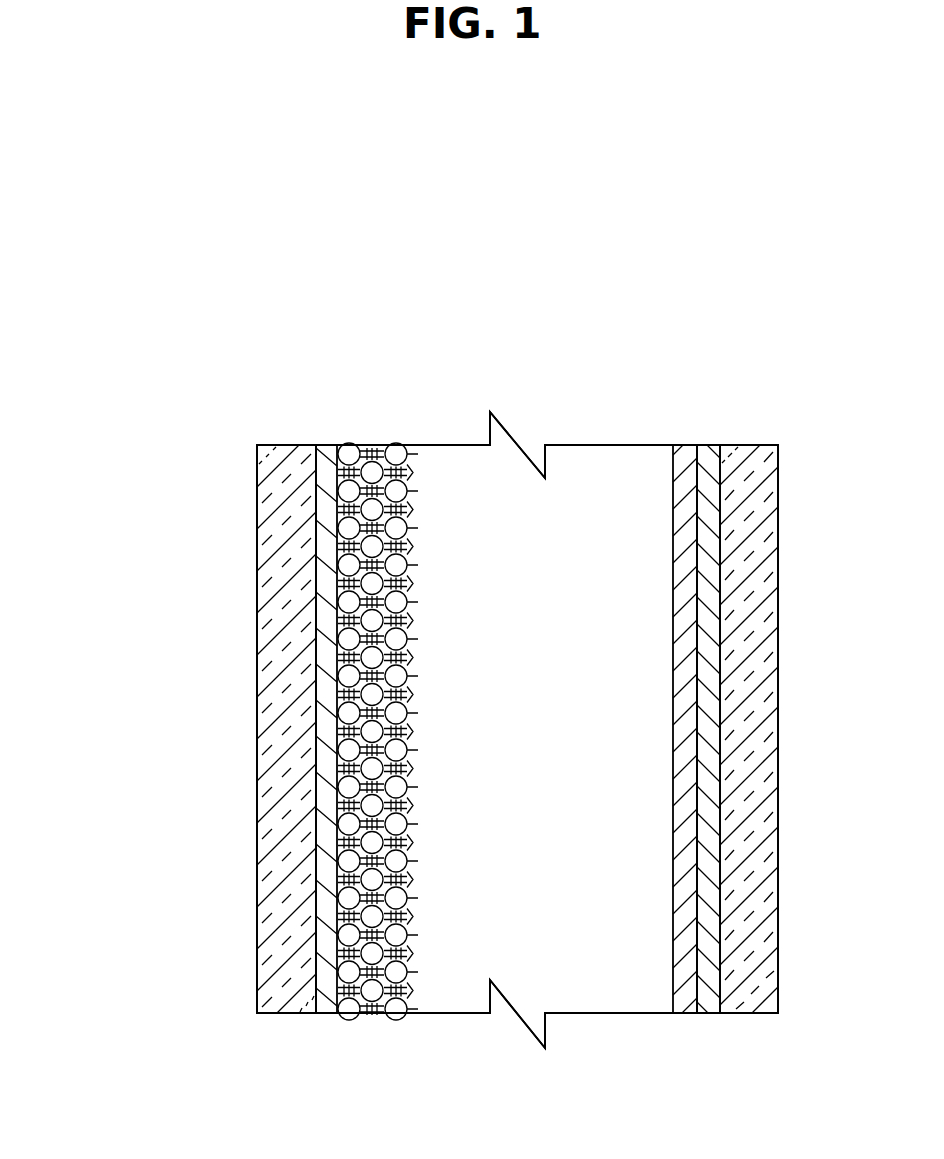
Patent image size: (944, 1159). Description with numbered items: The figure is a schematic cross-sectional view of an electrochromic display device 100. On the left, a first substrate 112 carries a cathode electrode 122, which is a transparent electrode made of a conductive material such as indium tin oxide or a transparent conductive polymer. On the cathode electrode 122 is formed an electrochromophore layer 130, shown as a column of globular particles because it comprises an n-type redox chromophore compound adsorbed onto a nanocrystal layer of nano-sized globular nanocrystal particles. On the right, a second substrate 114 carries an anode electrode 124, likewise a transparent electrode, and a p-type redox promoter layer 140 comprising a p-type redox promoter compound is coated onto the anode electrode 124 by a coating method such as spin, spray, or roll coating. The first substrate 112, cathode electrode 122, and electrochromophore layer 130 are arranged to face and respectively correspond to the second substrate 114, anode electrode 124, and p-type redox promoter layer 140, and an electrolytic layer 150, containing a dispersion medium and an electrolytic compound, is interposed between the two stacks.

The electrochromic display device 100 is at (200, 284).
The first substrate 112 is at (287, 457).
The cathode electrode 122 is at (327, 457).
The electrochromophore layer 130 is at (373, 446).
The electrolytic layer 150 is at (585, 468).
The p-type redox promoter layer 140 is at (683, 460).
The anode electrode 124 is at (705, 460).
The second substrate 114 is at (752, 460).